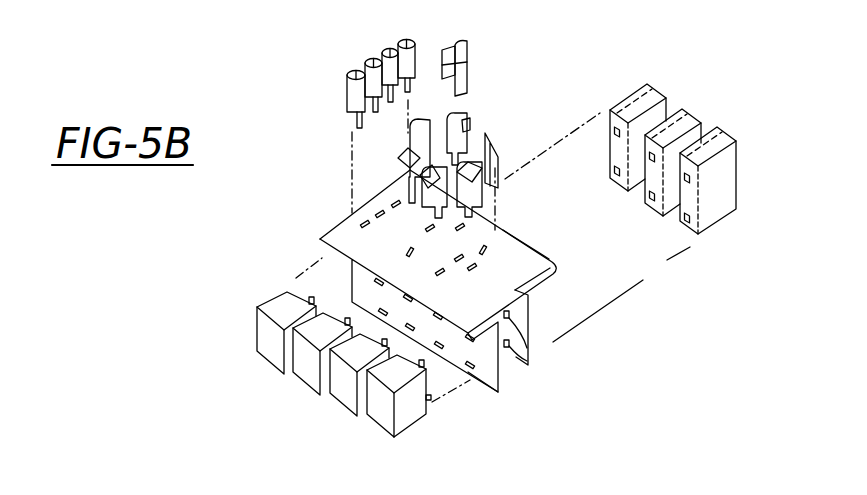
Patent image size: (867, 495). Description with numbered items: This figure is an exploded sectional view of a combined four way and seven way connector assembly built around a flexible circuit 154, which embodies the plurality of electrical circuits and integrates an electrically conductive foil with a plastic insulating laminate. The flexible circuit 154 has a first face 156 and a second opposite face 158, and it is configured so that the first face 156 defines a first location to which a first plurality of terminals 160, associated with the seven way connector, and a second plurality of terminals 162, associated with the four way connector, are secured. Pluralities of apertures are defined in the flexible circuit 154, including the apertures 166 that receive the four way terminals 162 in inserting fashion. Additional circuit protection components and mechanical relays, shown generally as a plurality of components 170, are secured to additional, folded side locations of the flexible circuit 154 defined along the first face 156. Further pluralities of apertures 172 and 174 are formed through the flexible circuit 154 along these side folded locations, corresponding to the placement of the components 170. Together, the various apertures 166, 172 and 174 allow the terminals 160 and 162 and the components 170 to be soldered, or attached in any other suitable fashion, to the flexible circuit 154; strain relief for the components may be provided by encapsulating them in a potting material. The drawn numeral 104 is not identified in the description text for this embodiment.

The base plate 104 is at (405, 251).
The flexible circuit 154 is at (330, 186).
The first face 156 is at (507, 243).
The second opposite face 158 is at (524, 314).
The first plurality of terminals 160 is at (470, 120).
The second plurality of terminals 162 is at (348, 103).
The plurality of apertures 166 is at (378, 214).
The plurality of components 170 is at (664, 117).
The plurality of apertures 172 is at (467, 336).
The plurality of apertures 174 is at (512, 317).